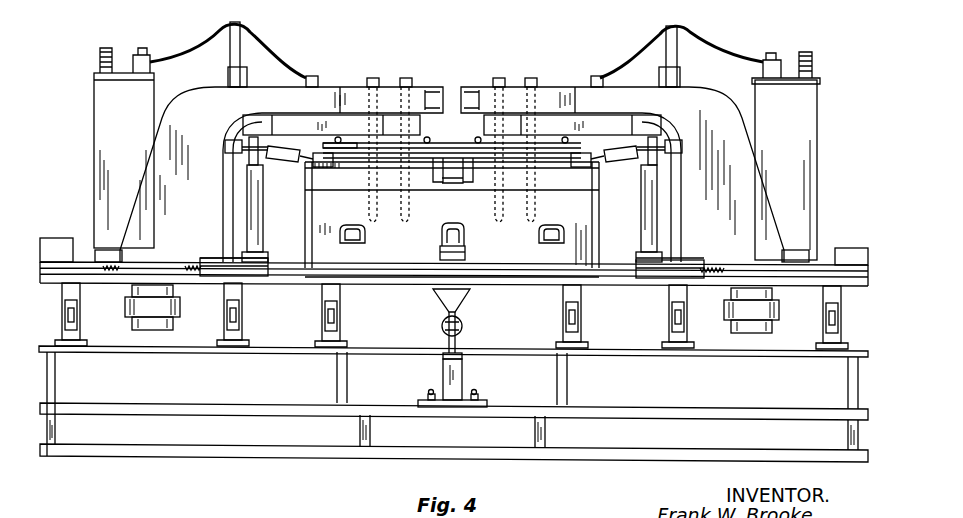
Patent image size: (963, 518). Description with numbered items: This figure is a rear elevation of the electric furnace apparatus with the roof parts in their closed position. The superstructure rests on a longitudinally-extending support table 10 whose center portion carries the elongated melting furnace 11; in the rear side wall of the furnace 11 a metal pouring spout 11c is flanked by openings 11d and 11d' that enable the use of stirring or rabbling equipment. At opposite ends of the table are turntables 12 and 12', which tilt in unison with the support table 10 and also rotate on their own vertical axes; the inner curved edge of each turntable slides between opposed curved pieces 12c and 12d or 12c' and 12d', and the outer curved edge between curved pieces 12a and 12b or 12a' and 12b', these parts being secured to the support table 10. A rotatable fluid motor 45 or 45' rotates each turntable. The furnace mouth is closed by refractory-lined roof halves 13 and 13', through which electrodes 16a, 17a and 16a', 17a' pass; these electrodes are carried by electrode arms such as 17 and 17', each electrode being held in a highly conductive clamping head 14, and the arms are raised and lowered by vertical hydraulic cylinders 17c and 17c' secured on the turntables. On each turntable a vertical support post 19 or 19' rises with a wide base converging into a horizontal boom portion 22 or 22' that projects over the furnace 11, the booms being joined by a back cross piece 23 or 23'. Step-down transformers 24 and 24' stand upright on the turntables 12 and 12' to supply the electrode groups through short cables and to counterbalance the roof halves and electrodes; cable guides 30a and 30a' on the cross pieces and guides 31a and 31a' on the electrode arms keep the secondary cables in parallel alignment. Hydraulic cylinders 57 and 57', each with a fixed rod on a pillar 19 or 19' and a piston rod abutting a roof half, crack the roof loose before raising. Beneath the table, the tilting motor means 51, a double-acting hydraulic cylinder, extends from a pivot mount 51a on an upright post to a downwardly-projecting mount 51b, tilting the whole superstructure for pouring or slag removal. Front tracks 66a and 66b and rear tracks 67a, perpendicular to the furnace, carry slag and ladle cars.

The support table 10 is at (391, 280).
The melting furnace 11 is at (385, 258).
The metal pouring spout 11c is at (452, 225).
The opening 11d is at (337, 219).
The opening 11d' is at (567, 220).
The turntable 12 is at (454, 255).
The turntable 12' is at (737, 248).
The curved piece 12a is at (61, 237).
The curved piece 12a' is at (843, 245).
The curved piece 12b is at (201, 315).
The curved piece 12b' is at (702, 316).
The curved piece 12c is at (253, 257).
The curved piece 12c' is at (649, 255).
The curved piece 12d is at (251, 284).
The curved piece 12d' is at (653, 286).
The roof half 13 is at (275, 194).
The roof half 13' is at (627, 194).
The electrode support or clamping head 14 is at (480, 131).
The electrode 16a is at (368, 126).
The electrode 16a' is at (527, 126).
The electrode arm 17 is at (331, 112).
The electrode arm 17' is at (572, 100).
The electrode 17a is at (405, 137).
The electrode 17a' is at (487, 137).
The hydraulic cylinder 17c is at (271, 244).
The hydraulic cylinder 17c' is at (630, 242).
The support post 19 is at (161, 174).
The support post 19' is at (745, 174).
The boom portion 22 is at (345, 85).
The boom portion 22' is at (577, 82).
The back cross piece 23 is at (220, 73).
The back cross piece 23' is at (690, 73).
The transformer 24 is at (124, 148).
The transformer 24' is at (786, 156).
The cable guide 30a is at (228, 43).
The cable guide 30a' is at (681, 43).
The cable guide 31a is at (298, 61).
The cable guide 31a' is at (609, 57).
The rotatable fluid motor 45 is at (133, 309).
The rotatable fluid motor 45' is at (769, 315).
The motor means 51 is at (463, 326).
The pivot mount 51a is at (443, 360).
The downwardly-projecting mount 51b is at (470, 292).
The hydraulic cylinder 57 is at (279, 165).
The hydraulic cylinder 57' is at (626, 166).
The front track 66a is at (329, 58).
The front track 66b is at (575, 58).
The rear track 67a is at (480, 400).